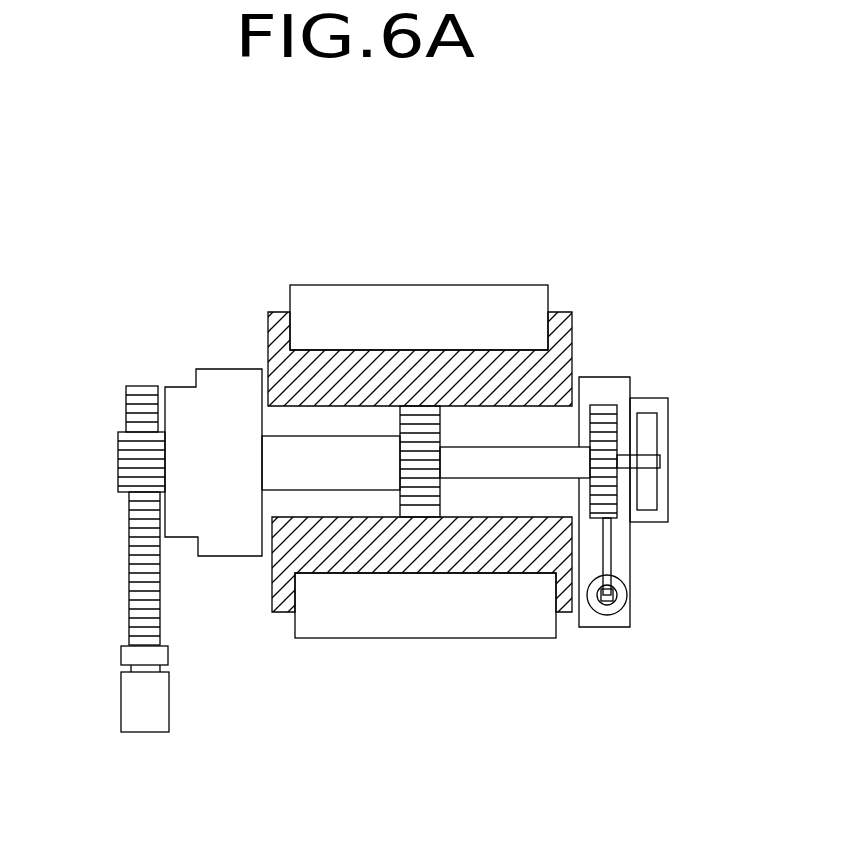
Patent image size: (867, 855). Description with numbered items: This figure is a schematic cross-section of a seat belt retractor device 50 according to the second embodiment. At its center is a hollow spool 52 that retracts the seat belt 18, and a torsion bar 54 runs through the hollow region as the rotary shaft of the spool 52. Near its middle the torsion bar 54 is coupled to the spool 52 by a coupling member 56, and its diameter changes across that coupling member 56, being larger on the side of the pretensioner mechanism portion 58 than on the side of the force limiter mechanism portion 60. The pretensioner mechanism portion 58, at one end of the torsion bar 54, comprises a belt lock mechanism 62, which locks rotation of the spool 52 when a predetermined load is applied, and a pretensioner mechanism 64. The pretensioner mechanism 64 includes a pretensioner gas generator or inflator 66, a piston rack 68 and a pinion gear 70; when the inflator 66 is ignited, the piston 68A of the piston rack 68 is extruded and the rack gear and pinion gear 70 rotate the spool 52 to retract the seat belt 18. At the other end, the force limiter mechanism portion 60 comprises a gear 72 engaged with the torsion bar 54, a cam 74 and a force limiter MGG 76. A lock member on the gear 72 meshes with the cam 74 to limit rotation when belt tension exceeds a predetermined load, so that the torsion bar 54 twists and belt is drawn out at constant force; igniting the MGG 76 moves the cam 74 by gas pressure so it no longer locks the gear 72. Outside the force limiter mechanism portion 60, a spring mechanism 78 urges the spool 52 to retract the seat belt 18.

The seat belt retractor device 50 is at (531, 212).
The spool 52 is at (280, 312).
The seat belt 18 is at (410, 296).
The pretensioner mechanism portion 58 is at (217, 268).
The pretensioner mechanism 64 is at (138, 380).
The belt lock mechanism 62 is at (215, 368).
The pinion gear 70 is at (118, 457).
The piston rack 68 is at (160, 604).
The piston 68A is at (168, 655).
The pretensioner gas generator (inflator) 66 is at (169, 700).
The torsion bar 54 is at (490, 443).
The coupling member 56 is at (440, 497).
The force limiter mechanism portion 60 is at (608, 372).
The gear 72 is at (640, 523).
The spring mechanism 78 is at (648, 398).
The cam 74 is at (612, 548).
The force limiter MGG 76 is at (600, 613).